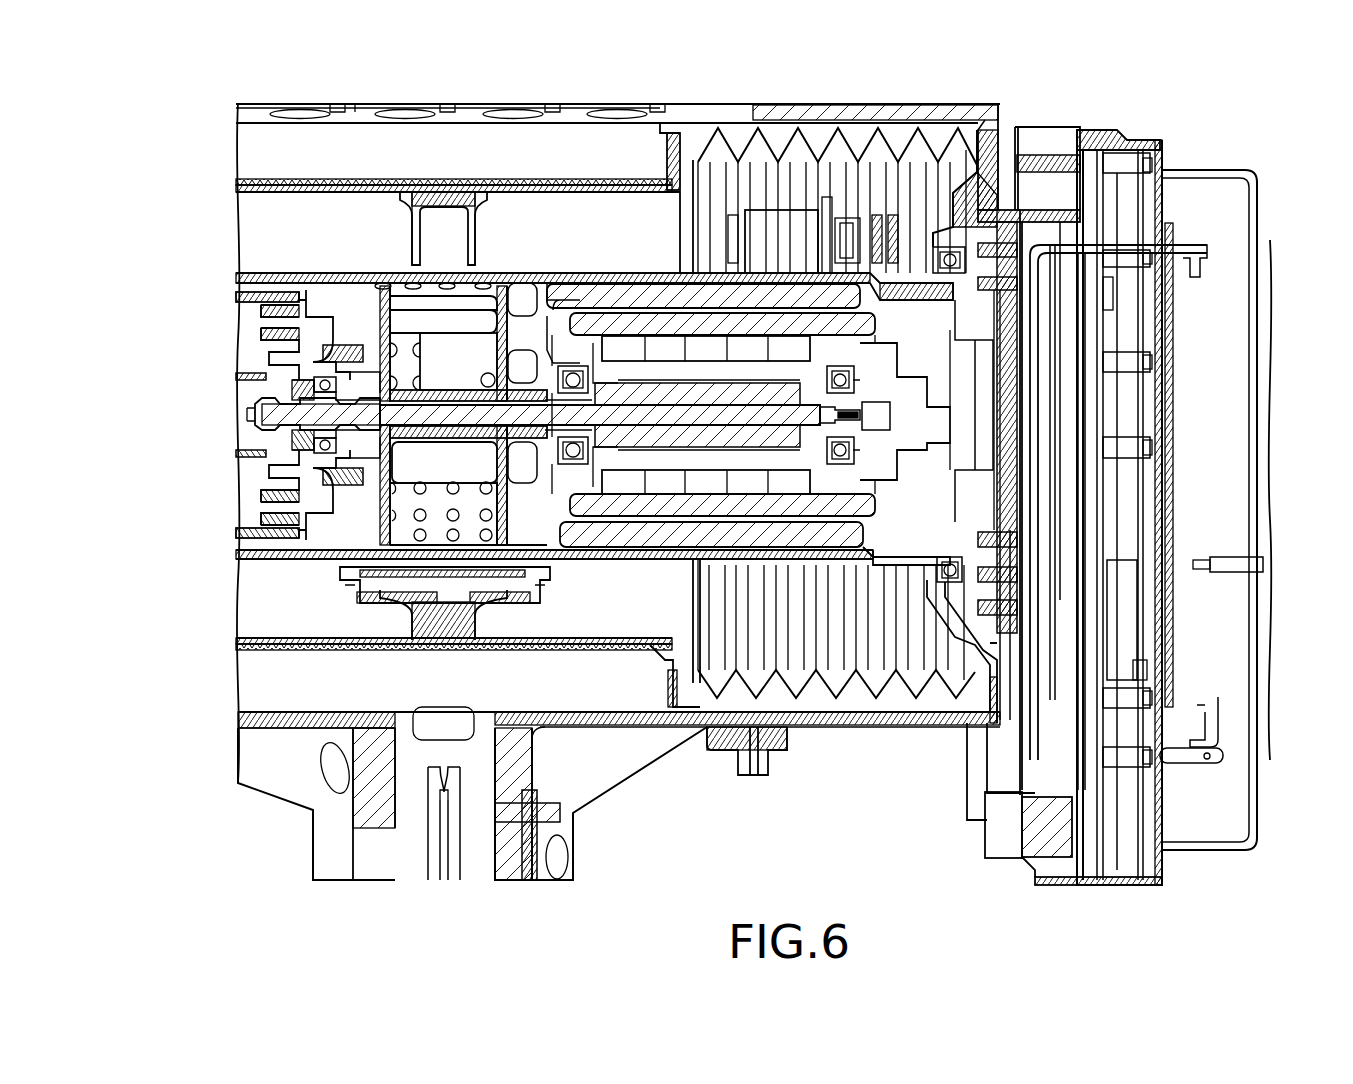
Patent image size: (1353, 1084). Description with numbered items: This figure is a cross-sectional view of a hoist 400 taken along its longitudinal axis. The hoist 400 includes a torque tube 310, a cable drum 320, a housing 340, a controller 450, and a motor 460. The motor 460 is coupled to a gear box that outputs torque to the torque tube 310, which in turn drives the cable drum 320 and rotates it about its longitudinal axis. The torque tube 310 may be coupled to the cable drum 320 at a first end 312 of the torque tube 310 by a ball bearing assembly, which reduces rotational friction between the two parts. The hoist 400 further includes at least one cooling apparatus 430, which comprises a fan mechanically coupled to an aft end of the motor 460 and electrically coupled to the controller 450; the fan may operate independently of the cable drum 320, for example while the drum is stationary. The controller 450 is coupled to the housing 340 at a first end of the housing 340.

The hoist 400 is at (203, 103).
The cable drum 320 is at (298, 185).
The torque tube 310 is at (327, 278).
The cooling apparatus 430 is at (457, 345).
The first end of torque tube 312 is at (420, 537).
The motor 460 is at (645, 522).
The housing 340 is at (993, 677).
The controller 450 is at (1155, 594).